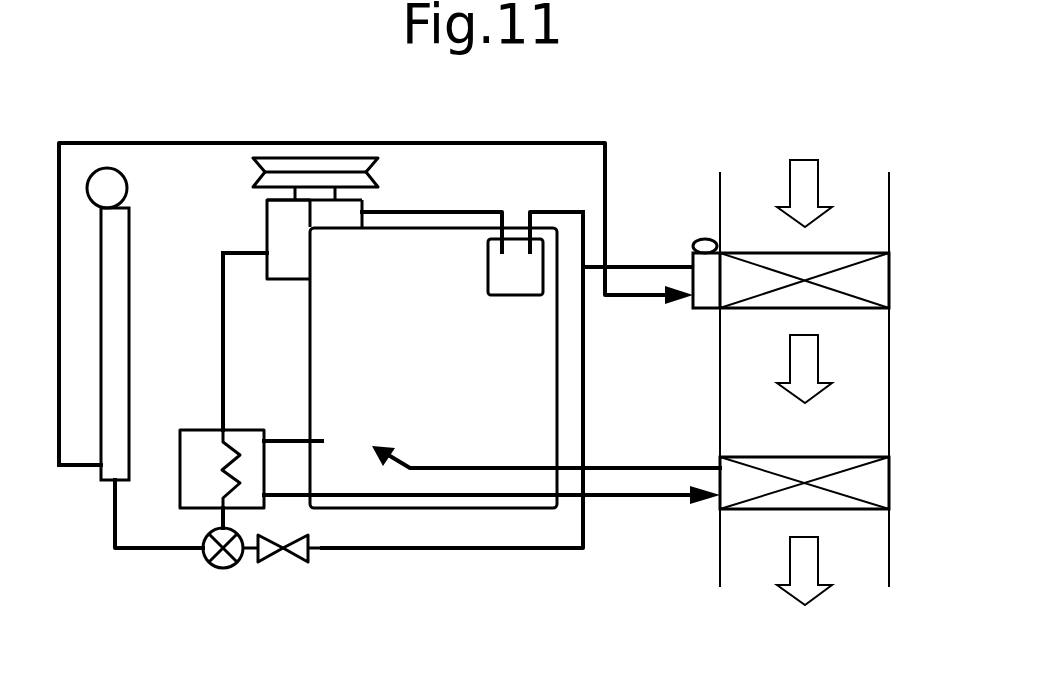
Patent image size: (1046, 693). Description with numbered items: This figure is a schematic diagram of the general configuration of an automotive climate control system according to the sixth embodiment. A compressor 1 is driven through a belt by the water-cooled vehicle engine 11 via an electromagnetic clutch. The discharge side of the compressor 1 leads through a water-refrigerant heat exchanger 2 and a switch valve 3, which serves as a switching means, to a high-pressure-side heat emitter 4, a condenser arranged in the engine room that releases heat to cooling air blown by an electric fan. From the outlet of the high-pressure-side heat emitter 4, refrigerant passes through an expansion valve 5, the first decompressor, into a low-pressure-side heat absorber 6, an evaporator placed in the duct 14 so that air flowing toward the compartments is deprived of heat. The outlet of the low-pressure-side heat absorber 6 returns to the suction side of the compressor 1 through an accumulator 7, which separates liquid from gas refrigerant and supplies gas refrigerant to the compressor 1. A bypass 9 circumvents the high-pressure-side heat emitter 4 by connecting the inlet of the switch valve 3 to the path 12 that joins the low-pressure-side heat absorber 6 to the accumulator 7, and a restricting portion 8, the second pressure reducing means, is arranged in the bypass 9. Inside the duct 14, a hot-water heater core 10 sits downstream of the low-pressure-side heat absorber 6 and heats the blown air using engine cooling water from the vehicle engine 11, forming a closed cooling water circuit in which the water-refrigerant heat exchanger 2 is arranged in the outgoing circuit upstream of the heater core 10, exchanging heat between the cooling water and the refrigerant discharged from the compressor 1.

The compressor 1 is at (273, 222).
The water-refrigerant heat exchanger 2 is at (205, 433).
The switch valve 3 is at (213, 565).
The high-pressure-side heat emitter 4 is at (117, 186).
The expansion valve 5 is at (703, 244).
The low-pressure-side heat absorber 6 is at (848, 258).
The accumulator 7 is at (520, 296).
The restricting portion 8 is at (298, 562).
The bypass 9 is at (462, 550).
The hot-water heater core 10 is at (848, 503).
The vehicle engine 11 is at (323, 361).
The path 12 is at (584, 263).
The duct 14 is at (889, 347).